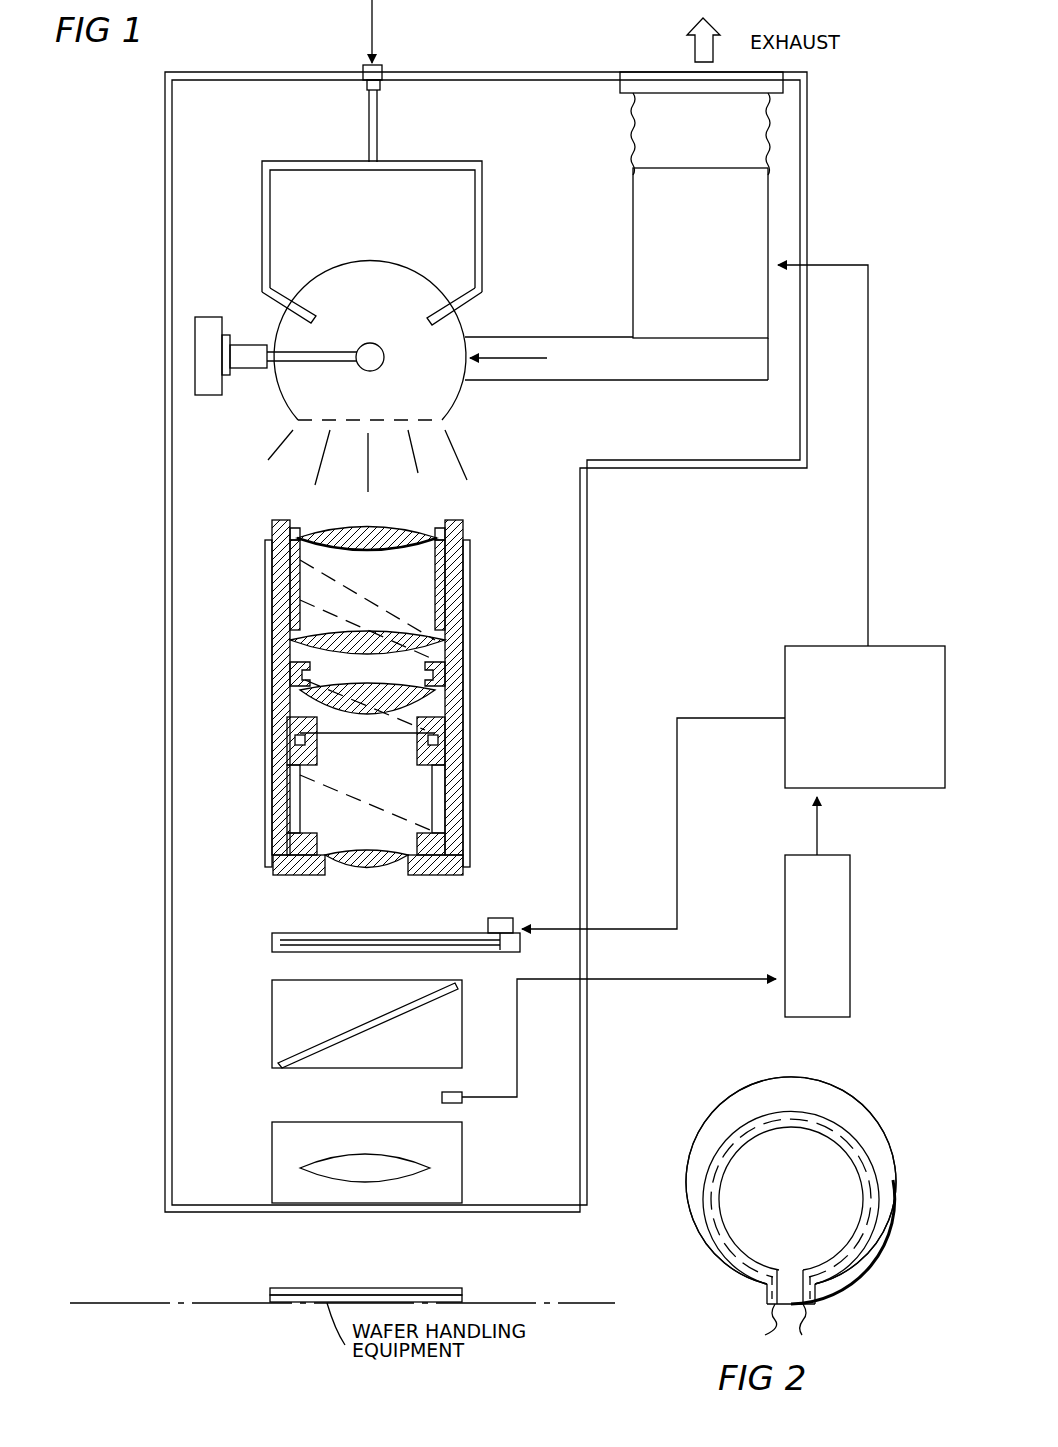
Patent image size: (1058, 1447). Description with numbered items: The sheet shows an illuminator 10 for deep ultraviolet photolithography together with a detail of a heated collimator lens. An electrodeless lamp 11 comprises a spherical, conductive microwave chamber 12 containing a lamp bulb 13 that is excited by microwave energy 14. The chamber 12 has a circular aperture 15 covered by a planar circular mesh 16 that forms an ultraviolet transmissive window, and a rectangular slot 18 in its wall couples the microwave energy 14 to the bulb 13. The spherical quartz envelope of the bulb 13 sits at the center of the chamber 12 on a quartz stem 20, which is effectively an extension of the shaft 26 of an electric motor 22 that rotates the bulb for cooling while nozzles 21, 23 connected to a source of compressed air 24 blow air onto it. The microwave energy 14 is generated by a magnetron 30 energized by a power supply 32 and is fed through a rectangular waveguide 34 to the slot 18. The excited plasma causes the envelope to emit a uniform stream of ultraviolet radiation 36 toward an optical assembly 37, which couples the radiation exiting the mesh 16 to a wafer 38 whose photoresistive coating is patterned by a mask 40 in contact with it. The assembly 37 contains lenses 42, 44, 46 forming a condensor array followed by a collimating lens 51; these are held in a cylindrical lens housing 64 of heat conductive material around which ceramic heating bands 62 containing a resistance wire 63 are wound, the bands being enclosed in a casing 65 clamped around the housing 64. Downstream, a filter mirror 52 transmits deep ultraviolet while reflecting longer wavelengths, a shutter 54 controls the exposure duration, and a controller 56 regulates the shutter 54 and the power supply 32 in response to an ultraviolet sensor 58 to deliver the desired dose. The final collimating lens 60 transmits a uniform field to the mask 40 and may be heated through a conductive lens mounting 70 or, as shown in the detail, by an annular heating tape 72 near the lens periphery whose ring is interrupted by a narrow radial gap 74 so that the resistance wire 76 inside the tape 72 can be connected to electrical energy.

In FIG. 1, the illuminator 10 is at (590, 1057).
In FIG. 1, the electrodeless lamp 11 is at (475, 321).
In FIG. 1, the microwave chamber 12 is at (384, 262).
In FIG. 1, the lamp bulb 13 is at (357, 359).
In FIG. 1, the microwave energy 14 is at (606, 360).
In FIG. 1, the circular aperture 15 is at (293, 418).
In FIG. 1, the planar circular mesh 16 is at (366, 418).
In FIG. 1, the rectangular slot 18 is at (455, 360).
In FIG. 1, the quartz stem 20 is at (332, 352).
In FIG. 1, the nozzle 21 is at (270, 226).
In FIG. 1, the electric motor 22 is at (195, 357).
In FIG. 1, the nozzle 23 is at (482, 251).
In FIG. 1, the source of compressed air 24 is at (447, 81).
In FIG. 1, the motor shaft 26 is at (250, 354).
In FIG. 1, the magnetron 30 is at (768, 203).
In FIG. 1, the power supply 32 is at (733, 597).
In FIG. 1, the rectangular waveguide 34 is at (733, 383).
In FIG. 1, the ultraviolet radiation 36 is at (470, 457).
In FIG. 1, the optical assembly 37 is at (365, 691).
In FIG. 1, the wafer 38 is at (462, 1300).
In FIG. 1, the mask 40 is at (287, 1288).
In FIG. 1, the lens 42 is at (388, 527).
In FIG. 1, the lens 44 is at (447, 608).
In FIG. 1, the lens 46 is at (290, 678).
In FIG. 1, the collimating lens 51 is at (390, 877).
In FIG. 1, the filter mirror 52 is at (272, 1035).
In FIG. 1, the shutter 54 is at (272, 940).
In FIG. 1, the controller 56 is at (817, 1017).
In FIG. 1, the ultraviolet sensor 58 is at (442, 1100).
In FIG. 1, the collimating lens 60 is at (300, 1168).
In FIG. 2, the collimating lens 60 is at (860, 1123).
In FIG. 1, the ceramic heating bands 62 is at (472, 568).
In FIG. 1, the resistance wire 63 is at (265, 845).
In FIG. 1, the cylindrical lens housing 64 is at (289, 528).
In FIG. 1, the casing 65 is at (472, 807).
In FIG. 1, the conductive lens mounting 70 is at (462, 1165).
In FIG. 2, the annular heating tape 72 is at (877, 1207).
In FIG. 2, the radial gap 74 is at (792, 1268).
In FIG. 2, the resistance wire 76 is at (803, 1332).